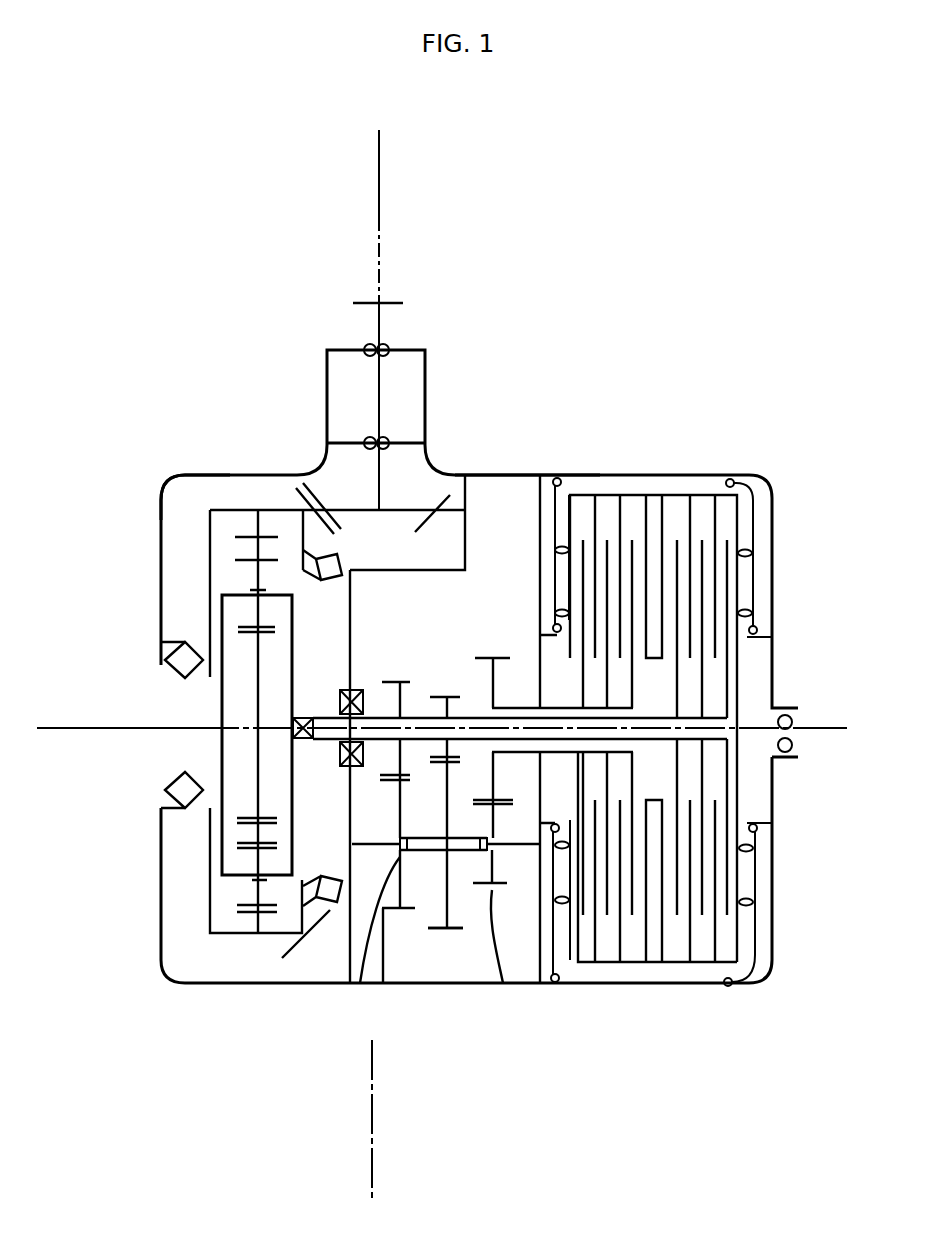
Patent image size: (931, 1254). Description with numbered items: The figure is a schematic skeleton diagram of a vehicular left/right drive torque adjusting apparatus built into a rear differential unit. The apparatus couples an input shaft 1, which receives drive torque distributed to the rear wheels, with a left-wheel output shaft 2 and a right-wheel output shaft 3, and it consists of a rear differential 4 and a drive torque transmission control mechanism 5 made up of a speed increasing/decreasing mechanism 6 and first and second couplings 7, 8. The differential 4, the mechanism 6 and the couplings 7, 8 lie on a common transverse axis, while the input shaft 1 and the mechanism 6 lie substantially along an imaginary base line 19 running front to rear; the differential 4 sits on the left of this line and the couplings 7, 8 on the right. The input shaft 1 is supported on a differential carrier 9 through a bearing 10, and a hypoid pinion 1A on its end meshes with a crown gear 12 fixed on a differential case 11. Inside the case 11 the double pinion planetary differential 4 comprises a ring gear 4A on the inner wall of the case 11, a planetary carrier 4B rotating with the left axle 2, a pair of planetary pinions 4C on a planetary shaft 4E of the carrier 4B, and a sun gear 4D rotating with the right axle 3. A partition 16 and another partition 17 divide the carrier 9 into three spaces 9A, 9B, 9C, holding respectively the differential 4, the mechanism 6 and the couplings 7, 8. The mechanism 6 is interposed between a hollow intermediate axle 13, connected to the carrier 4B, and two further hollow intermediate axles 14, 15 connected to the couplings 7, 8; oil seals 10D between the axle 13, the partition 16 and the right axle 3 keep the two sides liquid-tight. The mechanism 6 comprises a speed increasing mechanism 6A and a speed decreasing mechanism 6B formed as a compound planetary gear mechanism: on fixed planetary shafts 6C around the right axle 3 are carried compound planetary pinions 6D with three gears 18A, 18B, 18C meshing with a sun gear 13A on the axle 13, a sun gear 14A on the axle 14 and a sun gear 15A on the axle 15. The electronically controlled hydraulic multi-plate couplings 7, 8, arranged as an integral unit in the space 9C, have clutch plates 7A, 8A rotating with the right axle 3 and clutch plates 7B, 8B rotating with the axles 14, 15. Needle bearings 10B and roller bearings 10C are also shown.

The input shaft 1 is at (400, 320).
The hypoid pinion 1A is at (416, 507).
The left-wheel output shaft 2 is at (74, 723).
The right-wheel output shaft 3 is at (815, 733).
The rear differential 4 is at (195, 735).
The ring gear 4A is at (257, 517).
The planetary carrier 4B is at (220, 630).
The planetary pinions 4C is at (250, 577).
The sun gear 4D is at (250, 798).
The planetary shaft 4E is at (225, 877).
The drive torque transmission control mechanism 5 is at (514, 960).
The speed increasing/decreasing mechanism 6 is at (428, 953).
The speed increasing mechanism 6A is at (412, 918).
The speed decreasing mechanism 6B is at (465, 892).
The fixed planetary shafts 6C is at (522, 852).
The compound planetary pinion 6D is at (368, 935).
The first coupling 7 is at (700, 968).
The clutch plates 7A is at (683, 935).
The clutch plates 7B is at (717, 908).
The second coupling 8 is at (598, 975).
The clutch plates 8A is at (593, 935).
The clutch plates 8B is at (632, 873).
The differential carrier 9 is at (162, 948).
The space 9A is at (193, 490).
The space 9B is at (491, 503).
The space 9C is at (658, 483).
The bearing 10 is at (367, 347).
The needle bearings 10B is at (568, 567).
The roller bearings 10C is at (336, 560).
The oil seals 10D is at (308, 717).
The differential case 11 is at (200, 542).
The crown gear 12 is at (294, 490).
The third intermediate axle 13 is at (378, 717).
The sun gear 13A is at (403, 748).
The first intermediate axle 14 is at (648, 747).
The sun gear 14A is at (428, 745).
The second intermediate axle 15 is at (560, 753).
The sun gear 15A is at (487, 773).
The partition 16 is at (352, 613).
The partition 17 is at (540, 507).
The gear 18A is at (383, 988).
The gear 18B is at (447, 960).
The gear 18C is at (504, 988).
The imaginary base line 19 is at (379, 218).